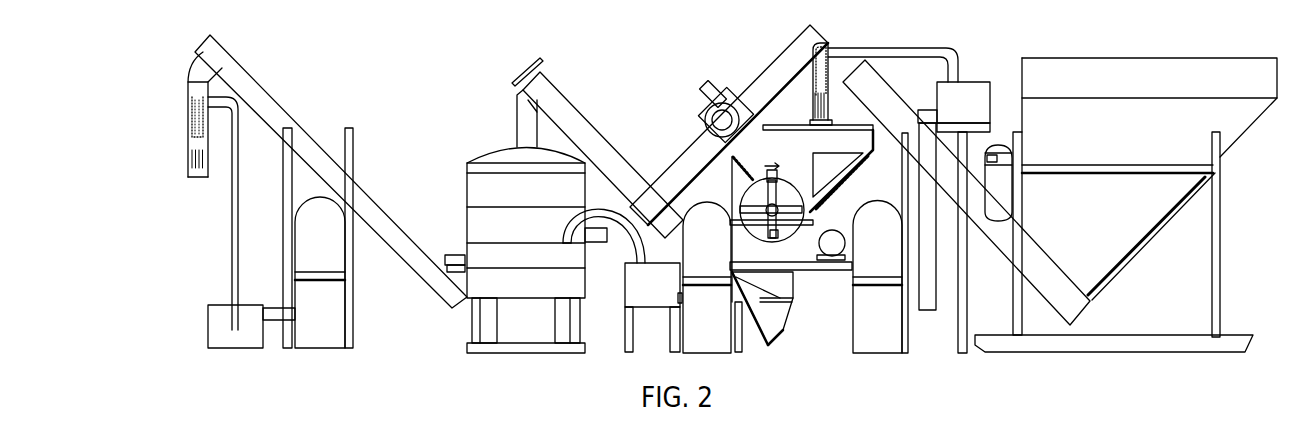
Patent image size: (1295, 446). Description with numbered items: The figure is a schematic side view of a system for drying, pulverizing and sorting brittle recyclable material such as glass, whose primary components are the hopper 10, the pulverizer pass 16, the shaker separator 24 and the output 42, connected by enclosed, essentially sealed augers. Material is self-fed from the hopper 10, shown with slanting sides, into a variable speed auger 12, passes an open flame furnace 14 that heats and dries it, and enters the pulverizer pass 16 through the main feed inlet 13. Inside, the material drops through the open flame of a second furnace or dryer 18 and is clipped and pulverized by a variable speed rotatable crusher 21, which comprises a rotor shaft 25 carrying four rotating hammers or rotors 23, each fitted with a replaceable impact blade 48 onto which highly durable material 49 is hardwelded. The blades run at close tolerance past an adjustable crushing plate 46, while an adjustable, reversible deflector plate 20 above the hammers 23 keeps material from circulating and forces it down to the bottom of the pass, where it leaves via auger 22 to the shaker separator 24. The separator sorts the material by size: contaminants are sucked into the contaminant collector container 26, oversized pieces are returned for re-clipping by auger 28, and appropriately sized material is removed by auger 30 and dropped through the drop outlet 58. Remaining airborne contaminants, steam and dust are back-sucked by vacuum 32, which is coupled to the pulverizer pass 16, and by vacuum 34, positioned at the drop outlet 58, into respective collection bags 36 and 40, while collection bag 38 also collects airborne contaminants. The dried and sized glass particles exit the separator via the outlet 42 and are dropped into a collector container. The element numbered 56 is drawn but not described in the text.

The hopper 10 is at (1195, 182).
The variable speed auger 12 is at (887, 98).
The main feed inlet 13 is at (835, 100).
The open flame furnace 14 is at (1002, 143).
The pulverizer pass 16 is at (773, 257).
The open flame furnace or dryer 18 is at (720, 97).
The adjustable deflector plate 20 is at (733, 170).
The rotatable crusher 21 is at (757, 196).
The auger 22 is at (570, 95).
The rotors (hammers) 23 is at (770, 235).
The shaker separator 24 is at (508, 188).
The rotor shaft 25 is at (772, 170).
The contaminant collector container 26 is at (518, 285).
The auger 28 is at (778, 55).
The auger 30 is at (280, 98).
The vacuum 32 is at (812, 117).
The vacuum 34 is at (194, 130).
The collection bag 36 is at (883, 320).
The collection bag 38 is at (700, 337).
The collection bag 40 is at (327, 314).
The output (outlet) 42 is at (457, 255).
The adjustable crushing plate 46 is at (832, 200).
The replaceable impact blade 48 is at (778, 237).
The highly durable material 49 is at (732, 224).
The pulley 56 is at (847, 265).
The drop outlet 58 is at (190, 172).